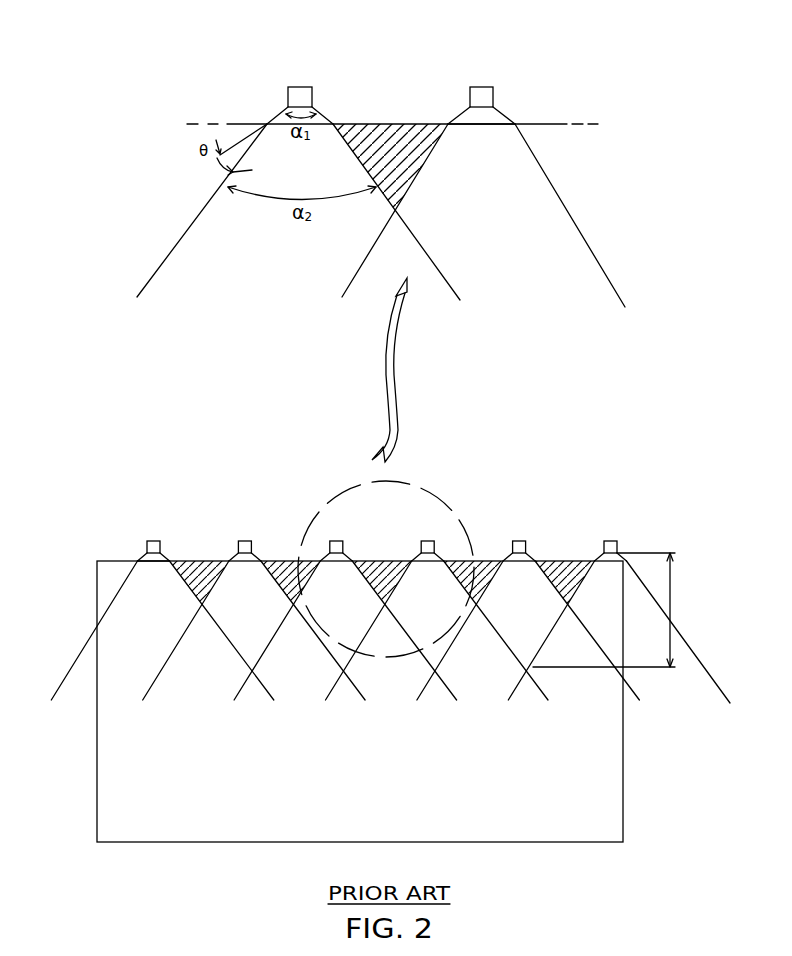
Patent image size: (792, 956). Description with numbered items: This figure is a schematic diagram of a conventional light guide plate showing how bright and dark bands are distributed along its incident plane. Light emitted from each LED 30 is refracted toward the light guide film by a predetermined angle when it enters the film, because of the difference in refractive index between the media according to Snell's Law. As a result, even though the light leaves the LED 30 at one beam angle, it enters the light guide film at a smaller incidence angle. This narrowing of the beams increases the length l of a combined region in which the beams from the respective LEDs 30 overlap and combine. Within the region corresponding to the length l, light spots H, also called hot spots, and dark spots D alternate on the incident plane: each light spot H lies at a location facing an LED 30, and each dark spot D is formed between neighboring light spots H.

The LED 30 is at (476, 90).
The dark spot D is at (386, 121).
The light spot H is at (497, 145).
The length of combined region l is at (607, 610).